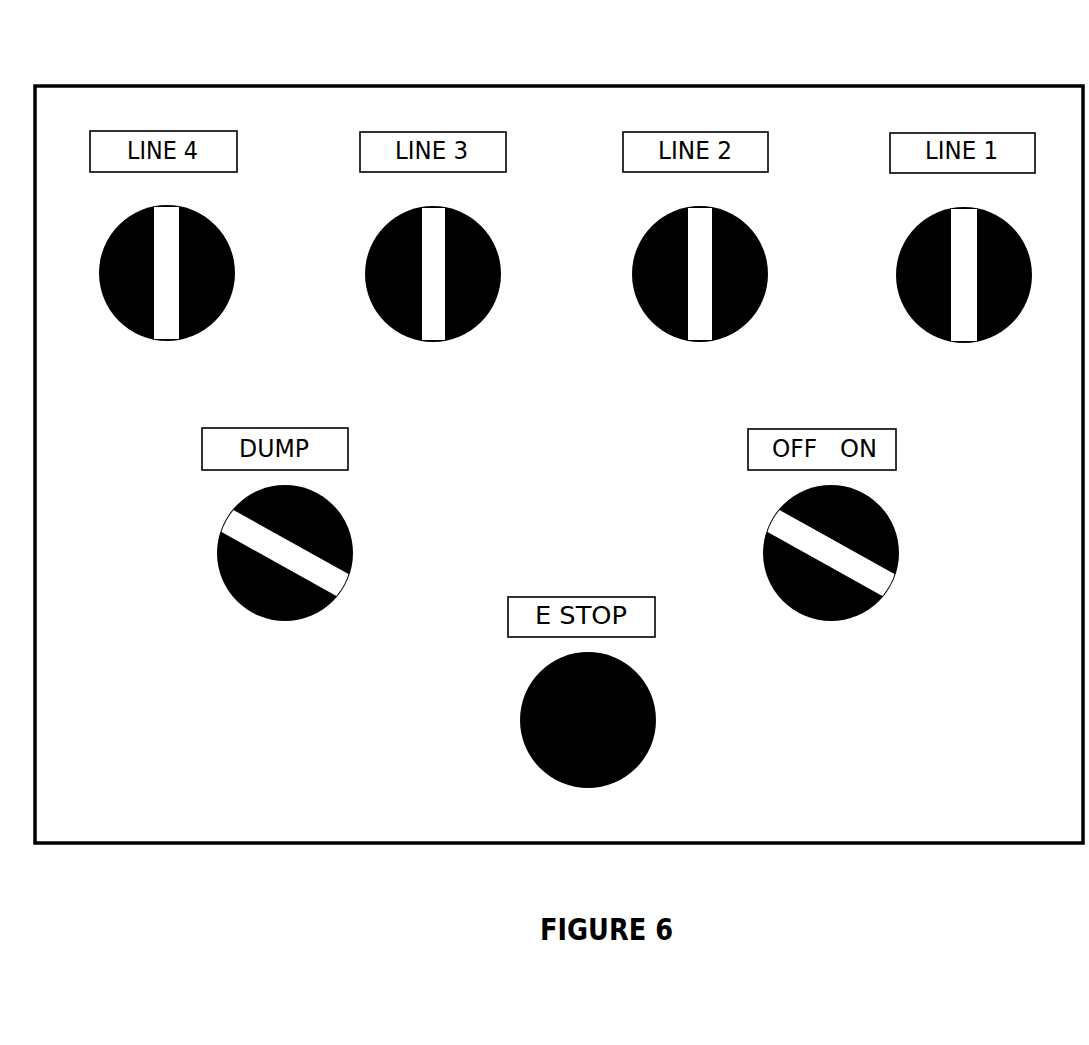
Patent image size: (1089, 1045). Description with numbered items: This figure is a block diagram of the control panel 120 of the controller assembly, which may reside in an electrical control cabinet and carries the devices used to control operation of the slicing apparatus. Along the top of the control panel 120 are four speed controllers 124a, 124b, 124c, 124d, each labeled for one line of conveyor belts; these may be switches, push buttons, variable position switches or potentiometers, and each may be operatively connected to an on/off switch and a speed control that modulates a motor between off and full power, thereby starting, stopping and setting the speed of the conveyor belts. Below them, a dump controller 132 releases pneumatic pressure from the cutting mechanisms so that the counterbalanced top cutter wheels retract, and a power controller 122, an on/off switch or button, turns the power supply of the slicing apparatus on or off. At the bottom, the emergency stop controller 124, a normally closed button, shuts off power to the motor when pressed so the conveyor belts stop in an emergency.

The control panel 120 is at (559, 439).
The power controller 122 is at (882, 538).
The emergency stop controller 124 is at (646, 717).
The speed controller 124a is at (186, 296).
The speed controller 124b is at (453, 296).
The speed controller 124c is at (718, 296).
The speed controller 124d is at (981, 297).
The dump controller 132 is at (341, 549).